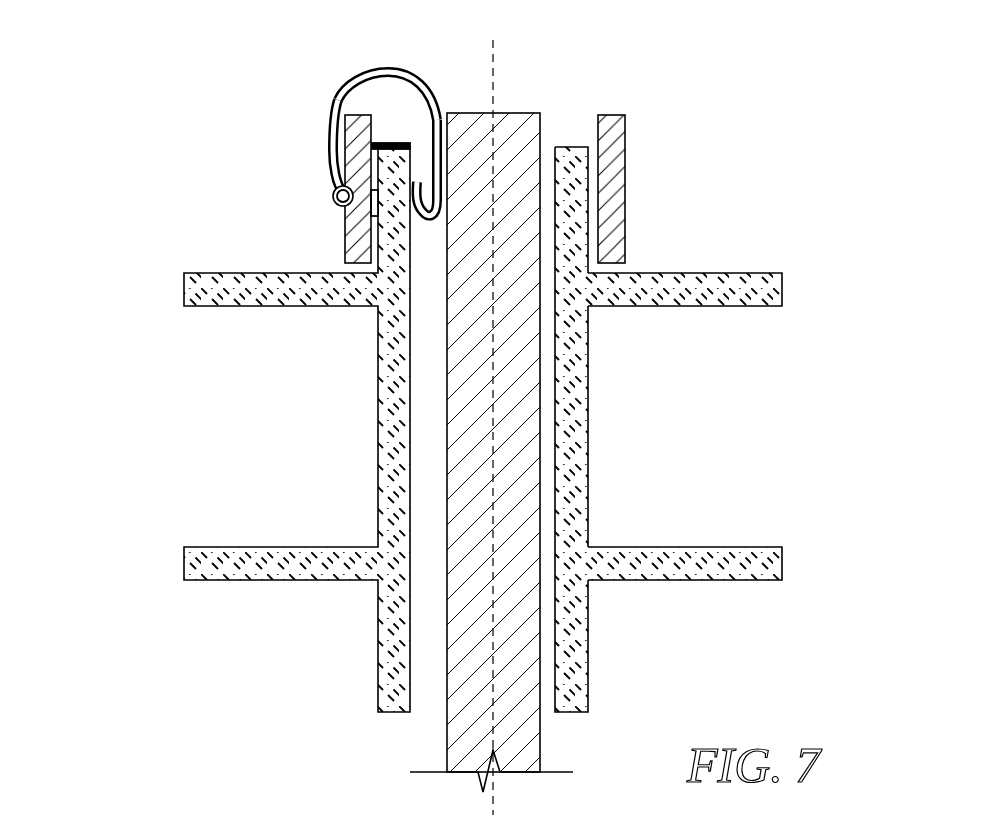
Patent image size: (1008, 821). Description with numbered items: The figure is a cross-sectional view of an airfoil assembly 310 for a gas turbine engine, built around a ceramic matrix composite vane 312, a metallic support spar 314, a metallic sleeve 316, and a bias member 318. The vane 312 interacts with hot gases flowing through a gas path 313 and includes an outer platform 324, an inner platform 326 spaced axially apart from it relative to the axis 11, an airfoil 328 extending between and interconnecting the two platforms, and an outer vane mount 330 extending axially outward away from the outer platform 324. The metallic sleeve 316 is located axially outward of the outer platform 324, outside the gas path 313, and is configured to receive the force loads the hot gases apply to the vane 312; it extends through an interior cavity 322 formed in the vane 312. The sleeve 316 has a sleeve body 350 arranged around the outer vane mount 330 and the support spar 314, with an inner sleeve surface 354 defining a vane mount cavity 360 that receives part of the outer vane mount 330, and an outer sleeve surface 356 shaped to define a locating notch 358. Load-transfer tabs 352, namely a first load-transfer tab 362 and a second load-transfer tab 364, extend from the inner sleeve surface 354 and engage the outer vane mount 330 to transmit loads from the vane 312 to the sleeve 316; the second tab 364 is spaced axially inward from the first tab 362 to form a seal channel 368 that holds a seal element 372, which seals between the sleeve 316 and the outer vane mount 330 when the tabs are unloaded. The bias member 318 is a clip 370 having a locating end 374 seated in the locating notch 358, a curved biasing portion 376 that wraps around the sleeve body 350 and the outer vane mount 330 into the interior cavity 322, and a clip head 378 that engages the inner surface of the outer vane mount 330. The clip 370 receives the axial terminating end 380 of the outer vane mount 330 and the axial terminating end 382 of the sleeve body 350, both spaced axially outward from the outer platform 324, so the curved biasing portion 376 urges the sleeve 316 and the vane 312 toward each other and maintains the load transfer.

The airfoil assembly 310 is at (174, 141).
The bias member 318 is at (335, 113).
The curved biasing portion 376 is at (343, 62).
The clip 370 is at (321, 110).
The locating end 374 is at (328, 196).
The clip head 378 is at (434, 195).
The first load-transfer tab 362 is at (373, 158).
The seal channel 368 is at (388, 191).
The seal element 372 is at (397, 158).
The locating notch 358 is at (352, 227).
The load-transfer tabs 352 is at (372, 267).
The second load-transfer tab 364 is at (383, 239).
The gas path 313 is at (298, 437).
The metallic support spar 314 is at (512, 108).
The vane mount cavity 360 is at (731, 360).
The outer vane mount 330 is at (572, 133).
The axial terminating end 380 is at (570, 145).
The axial terminating end 382 is at (608, 114).
The metallic sleeve 316 is at (639, 142).
The inner sleeve surface 354 is at (597, 160).
The sleeve body 350 is at (629, 217).
The outer sleeve surface 356 is at (627, 242).
The outer platform 324 is at (785, 268).
The inner platform 326 is at (785, 584).
The airfoil 328 is at (592, 452).
The ceramic matrix composite vane 312 is at (760, 343).
The interior cavity 322 is at (425, 707).
The axis 11 is at (495, 800).